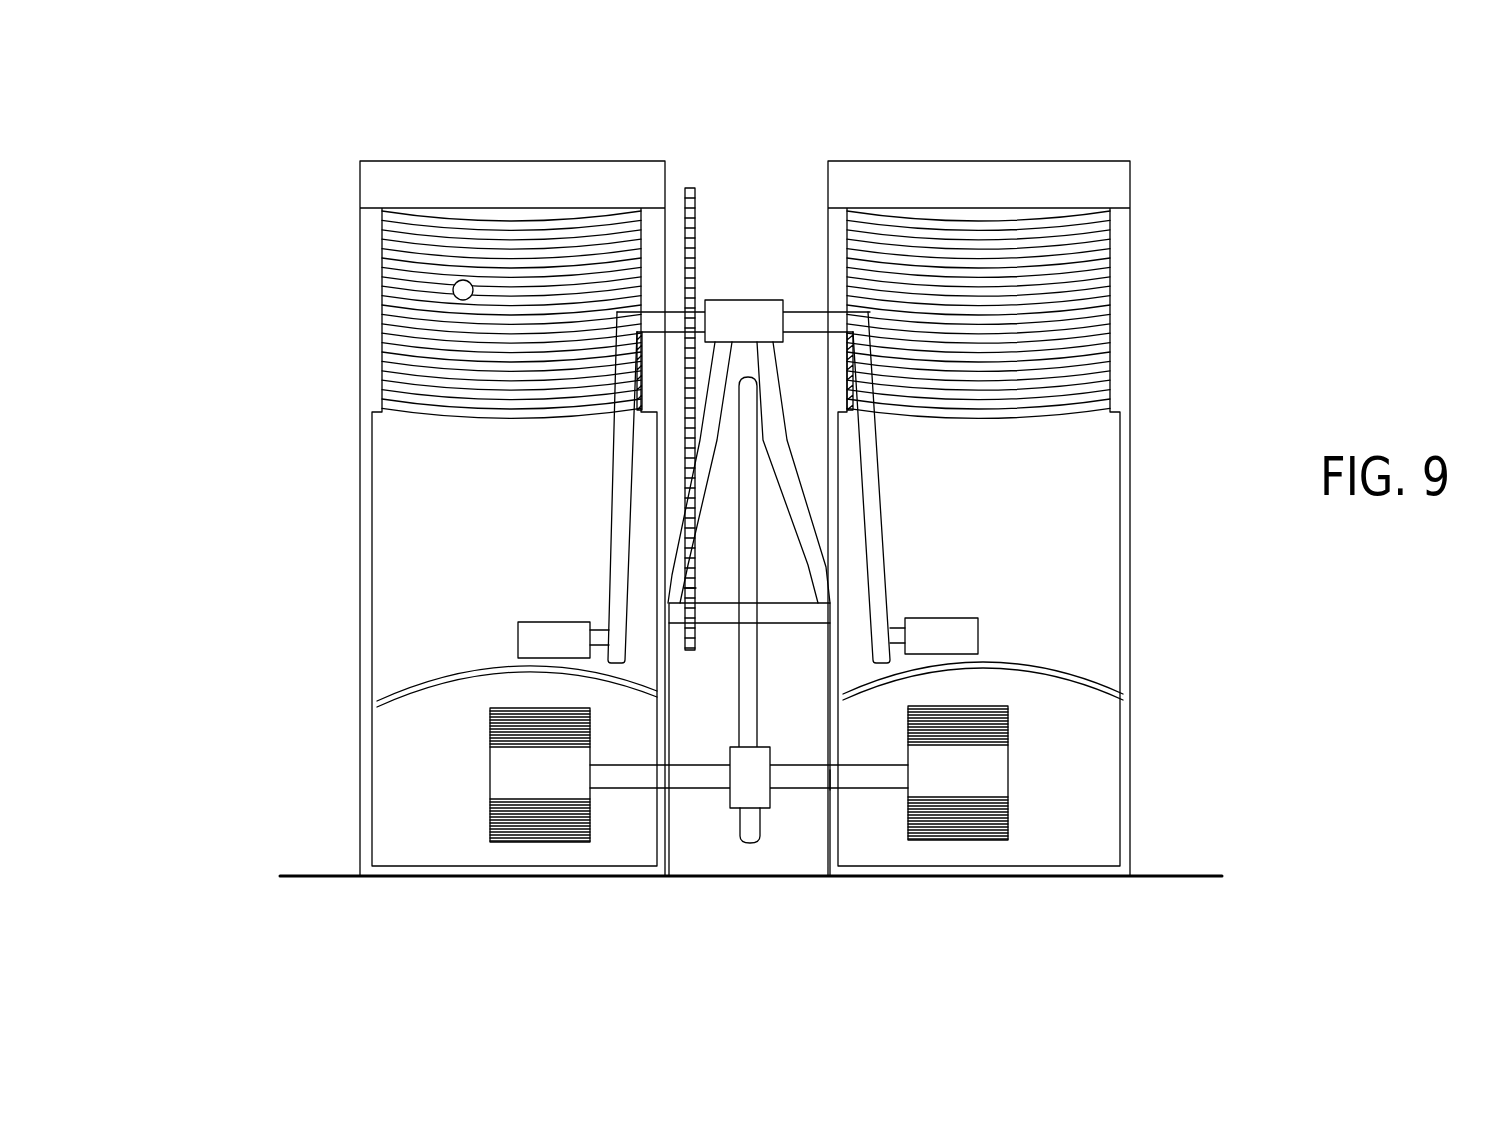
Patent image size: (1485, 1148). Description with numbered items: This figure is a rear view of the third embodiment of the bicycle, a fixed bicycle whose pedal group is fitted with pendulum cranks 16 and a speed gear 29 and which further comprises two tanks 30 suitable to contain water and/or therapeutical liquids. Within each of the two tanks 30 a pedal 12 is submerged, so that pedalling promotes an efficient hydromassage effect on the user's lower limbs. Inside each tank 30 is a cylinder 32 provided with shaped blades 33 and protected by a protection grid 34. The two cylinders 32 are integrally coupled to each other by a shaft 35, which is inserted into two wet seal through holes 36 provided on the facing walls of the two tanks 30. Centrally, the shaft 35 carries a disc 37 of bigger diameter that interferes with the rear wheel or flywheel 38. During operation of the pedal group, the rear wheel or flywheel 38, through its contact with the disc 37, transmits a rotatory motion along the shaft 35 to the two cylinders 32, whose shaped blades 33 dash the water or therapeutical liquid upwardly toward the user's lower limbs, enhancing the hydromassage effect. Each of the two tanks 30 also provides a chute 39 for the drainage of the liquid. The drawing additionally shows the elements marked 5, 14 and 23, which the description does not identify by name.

The probe rod 5 is at (688, 188).
The pedal 12 is at (537, 635).
The support bar 14 is at (814, 320).
The pendulum cranks 16 is at (622, 477).
The cross member 23 is at (802, 612).
The speed gear 29 is at (698, 592).
The tanks 30 is at (430, 540).
The cylinder 32 is at (527, 778).
The shaped blades 33 is at (540, 735).
The protection grid 34 is at (455, 680).
The shaft 35 is at (700, 780).
The wet seal through holes 36 is at (838, 778).
The disc 37 is at (752, 793).
The rear wheel or flywheel 38 is at (743, 400).
The chute 39 is at (453, 289).